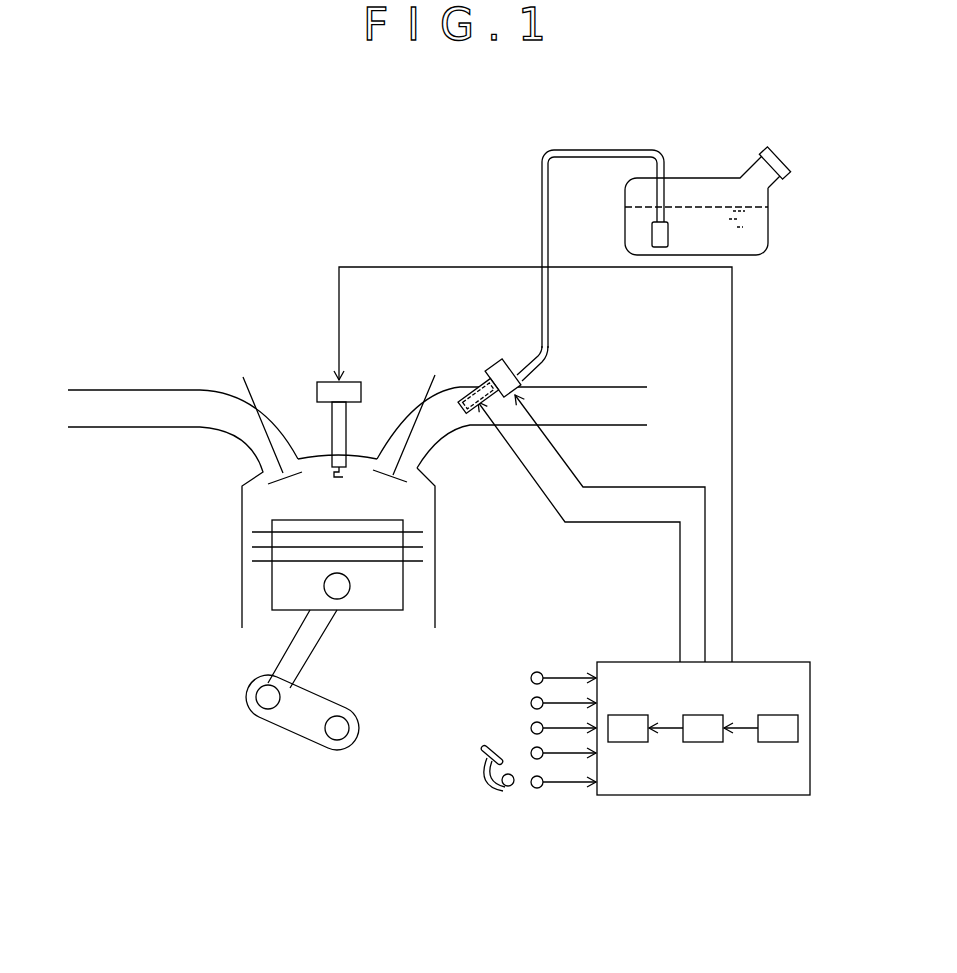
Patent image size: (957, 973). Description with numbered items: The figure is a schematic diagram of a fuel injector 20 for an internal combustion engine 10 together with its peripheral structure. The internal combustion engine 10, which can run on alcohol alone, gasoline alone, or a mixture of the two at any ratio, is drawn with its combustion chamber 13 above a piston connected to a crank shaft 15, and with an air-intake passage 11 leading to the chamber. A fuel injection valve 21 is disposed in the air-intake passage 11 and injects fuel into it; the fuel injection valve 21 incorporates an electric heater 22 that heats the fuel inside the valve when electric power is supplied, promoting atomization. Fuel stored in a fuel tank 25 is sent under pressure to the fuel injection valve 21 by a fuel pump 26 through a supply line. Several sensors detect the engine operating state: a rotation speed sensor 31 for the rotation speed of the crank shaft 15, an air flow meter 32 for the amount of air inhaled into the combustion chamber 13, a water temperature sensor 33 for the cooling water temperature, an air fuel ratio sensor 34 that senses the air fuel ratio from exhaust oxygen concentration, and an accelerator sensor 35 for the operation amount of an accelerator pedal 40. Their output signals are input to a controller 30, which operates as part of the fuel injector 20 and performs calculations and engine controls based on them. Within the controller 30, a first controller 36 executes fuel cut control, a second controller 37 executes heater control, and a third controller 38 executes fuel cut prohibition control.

The internal combustion engine 10 is at (251, 562).
The air-intake passage 11 is at (598, 421).
The combustion chamber 13 is at (242, 505).
The crank shaft 15 is at (350, 727).
The fuel injector 20 is at (635, 280).
The fuel injection valve 21 is at (521, 380).
The heater 22 is at (466, 385).
The fuel tank 25 is at (768, 220).
The fuel pump 26 is at (670, 233).
The controller 30 is at (703, 705).
The rotation speed sensor 31 is at (531, 676).
The air flow meter 32 is at (531, 701).
The water temperature sensor 33 is at (531, 726).
The air fuel ratio sensor 34 is at (531, 751).
The accelerator sensor 35 is at (537, 788).
The first controller 36 is at (630, 715).
The second controller 37 is at (778, 715).
The third controller 38 is at (702, 743).
The accelerator pedal 40 is at (480, 748).